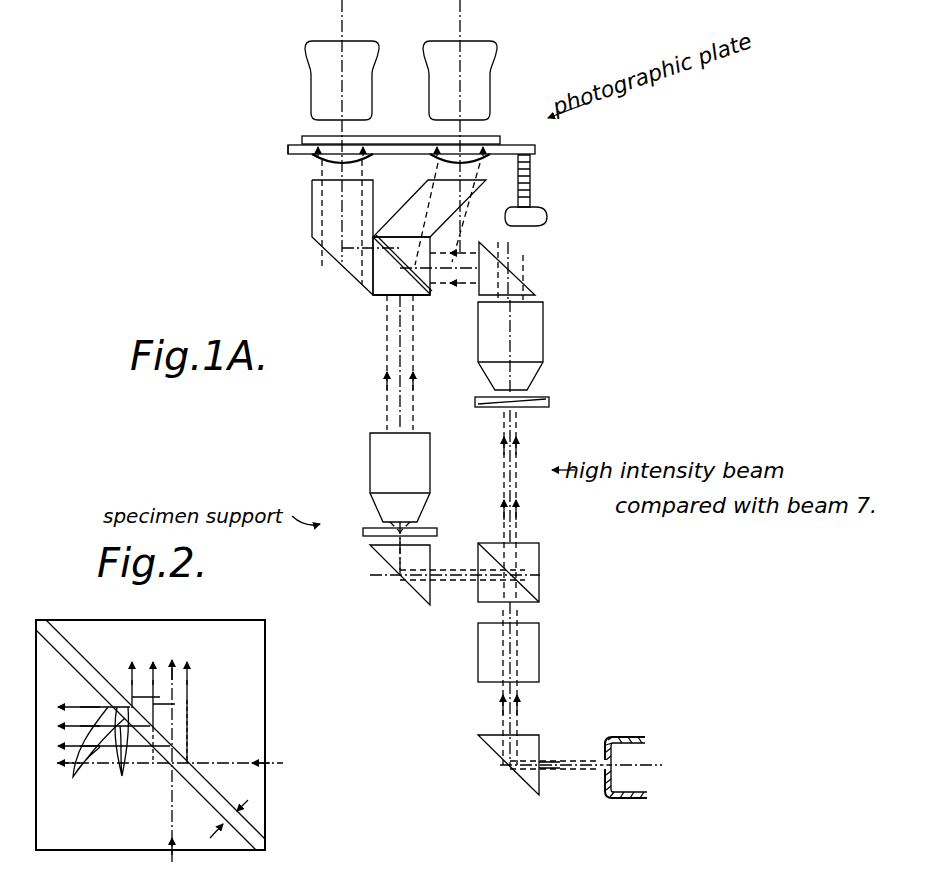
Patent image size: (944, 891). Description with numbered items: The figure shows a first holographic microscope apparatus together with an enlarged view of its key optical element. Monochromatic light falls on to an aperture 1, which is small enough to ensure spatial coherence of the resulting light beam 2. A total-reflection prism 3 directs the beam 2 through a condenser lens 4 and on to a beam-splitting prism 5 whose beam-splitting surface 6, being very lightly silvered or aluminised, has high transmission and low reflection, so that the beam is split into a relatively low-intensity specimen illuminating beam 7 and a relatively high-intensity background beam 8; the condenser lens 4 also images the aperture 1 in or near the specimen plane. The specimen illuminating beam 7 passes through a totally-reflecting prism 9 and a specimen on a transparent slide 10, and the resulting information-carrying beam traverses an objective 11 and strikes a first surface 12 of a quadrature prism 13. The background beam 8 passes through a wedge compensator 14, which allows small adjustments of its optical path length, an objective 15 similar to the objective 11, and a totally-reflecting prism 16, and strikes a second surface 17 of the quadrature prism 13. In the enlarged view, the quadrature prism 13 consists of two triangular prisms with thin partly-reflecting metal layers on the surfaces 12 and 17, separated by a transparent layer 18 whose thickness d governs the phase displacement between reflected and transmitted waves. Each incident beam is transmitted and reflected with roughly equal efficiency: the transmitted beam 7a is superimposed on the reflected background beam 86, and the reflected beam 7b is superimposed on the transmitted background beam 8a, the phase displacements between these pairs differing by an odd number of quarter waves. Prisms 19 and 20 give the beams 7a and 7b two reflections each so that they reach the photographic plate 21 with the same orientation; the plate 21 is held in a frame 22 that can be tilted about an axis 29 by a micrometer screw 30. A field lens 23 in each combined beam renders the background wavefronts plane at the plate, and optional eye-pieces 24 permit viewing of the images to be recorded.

In FIG. 1A, the aperture 1 is at (620, 750).
In FIG. 1A, the light beam 2 is at (548, 765).
In FIG. 1A, the total-reflection prism 3 is at (493, 745).
In FIG. 1A, the condenser lens 4 is at (478, 657).
In FIG. 1A, the beam-splitting prism 5 is at (540, 558).
In FIG. 1A, the beam-splitting surface 6 is at (535, 592).
In FIG. 1A, the specimen illuminating beam 7 is at (470, 578).
In FIG. 2, the specimen illuminating beam 7 is at (170, 858).
In FIG. 2, the transmitted information-carrying beam 7a is at (190, 668).
In FIG. 2, the reflected information-carrying beam 7b is at (128, 753).
In FIG. 1A, the background beam 8 is at (517, 472).
In FIG. 2, the background beam 8 is at (275, 764).
In FIG. 2, the transmitted background beam 8a is at (114, 754).
In FIG. 2, the reflected part of beam 8 86 is at (187, 713).
In FIG. 1A, the totally-reflecting prism 9 is at (405, 582).
In FIG. 1A, the transparent slide 10 is at (363, 532).
In FIG. 1A, the objective 11 is at (376, 462).
In FIG. 1A, the first surface 12 is at (420, 300).
In FIG. 2, the first surface 12 is at (240, 840).
In FIG. 1A, the quadrature prism 13 is at (431, 249).
In FIG. 2, the quadrature prism 13 is at (266, 678).
In FIG. 1A, the wedge compensator 14 is at (549, 402).
In FIG. 1A, the objective 15 is at (535, 336).
In FIG. 1A, the totally-reflecting prism 16 is at (514, 280).
In FIG. 1A, the second surface 17 is at (394, 228).
In FIG. 2, the second surface 17 is at (215, 793).
In FIG. 2, the transparent layer 18 is at (52, 626).
In FIG. 1A, the prism 19 is at (313, 213).
In FIG. 1A, the prism 20 is at (472, 198).
In FIG. 1A, the photographic plate 21 is at (500, 140).
In FIG. 1A, the frame or slide 22 is at (535, 150).
In FIG. 1A, the field lens 23 is at (314, 162).
In FIG. 1A, the eye-pieces 24 is at (314, 50).
In FIG. 1A, the axis 29 is at (289, 151).
In FIG. 1A, the micrometer screw 30 is at (532, 191).
In FIG. 2, the thickness of the layer d is at (235, 816).